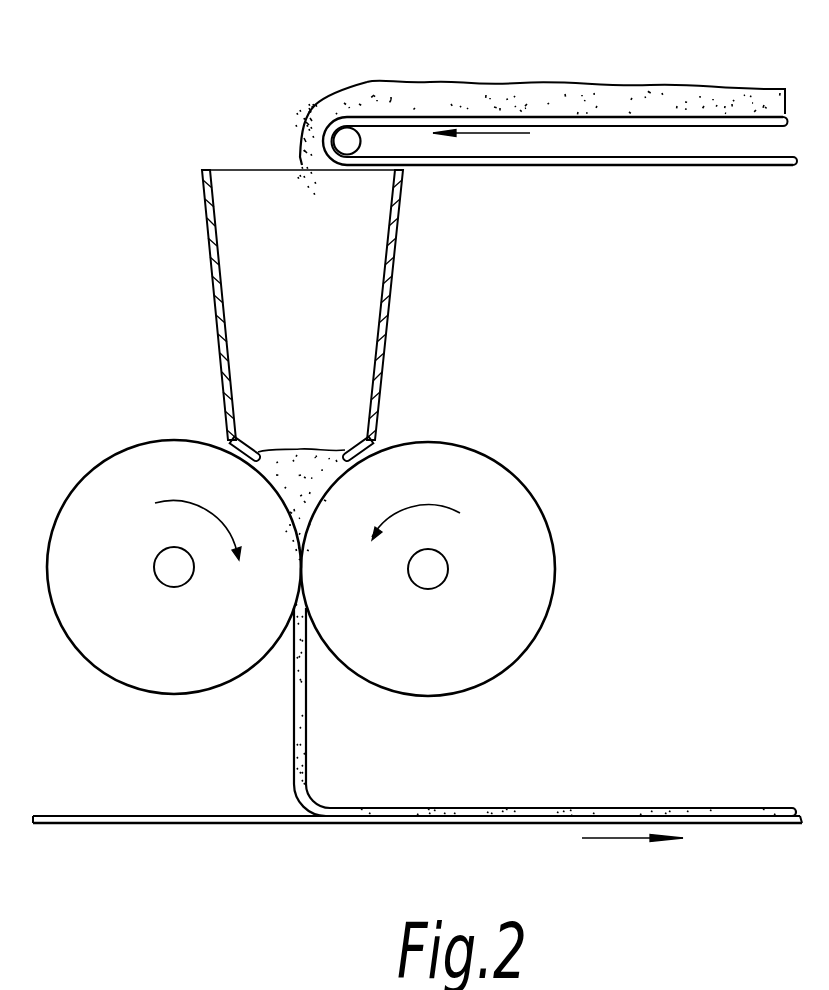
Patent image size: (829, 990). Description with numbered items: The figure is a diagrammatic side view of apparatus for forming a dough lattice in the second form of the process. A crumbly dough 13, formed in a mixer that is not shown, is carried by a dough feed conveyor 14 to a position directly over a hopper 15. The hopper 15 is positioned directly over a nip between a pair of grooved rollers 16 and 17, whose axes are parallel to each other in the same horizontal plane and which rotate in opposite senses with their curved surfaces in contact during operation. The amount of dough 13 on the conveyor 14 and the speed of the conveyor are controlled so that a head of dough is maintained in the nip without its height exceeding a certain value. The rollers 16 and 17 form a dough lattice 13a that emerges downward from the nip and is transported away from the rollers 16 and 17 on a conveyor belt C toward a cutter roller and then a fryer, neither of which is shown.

The crumbly dough 13 is at (530, 90).
The dough feed conveyor 14 is at (590, 166).
The hopper 15 is at (393, 265).
The grooved roller 16 is at (493, 470).
The grooved roller 17 is at (107, 470).
The dough lattice 13a is at (305, 725).
The conveyor belt C is at (168, 823).